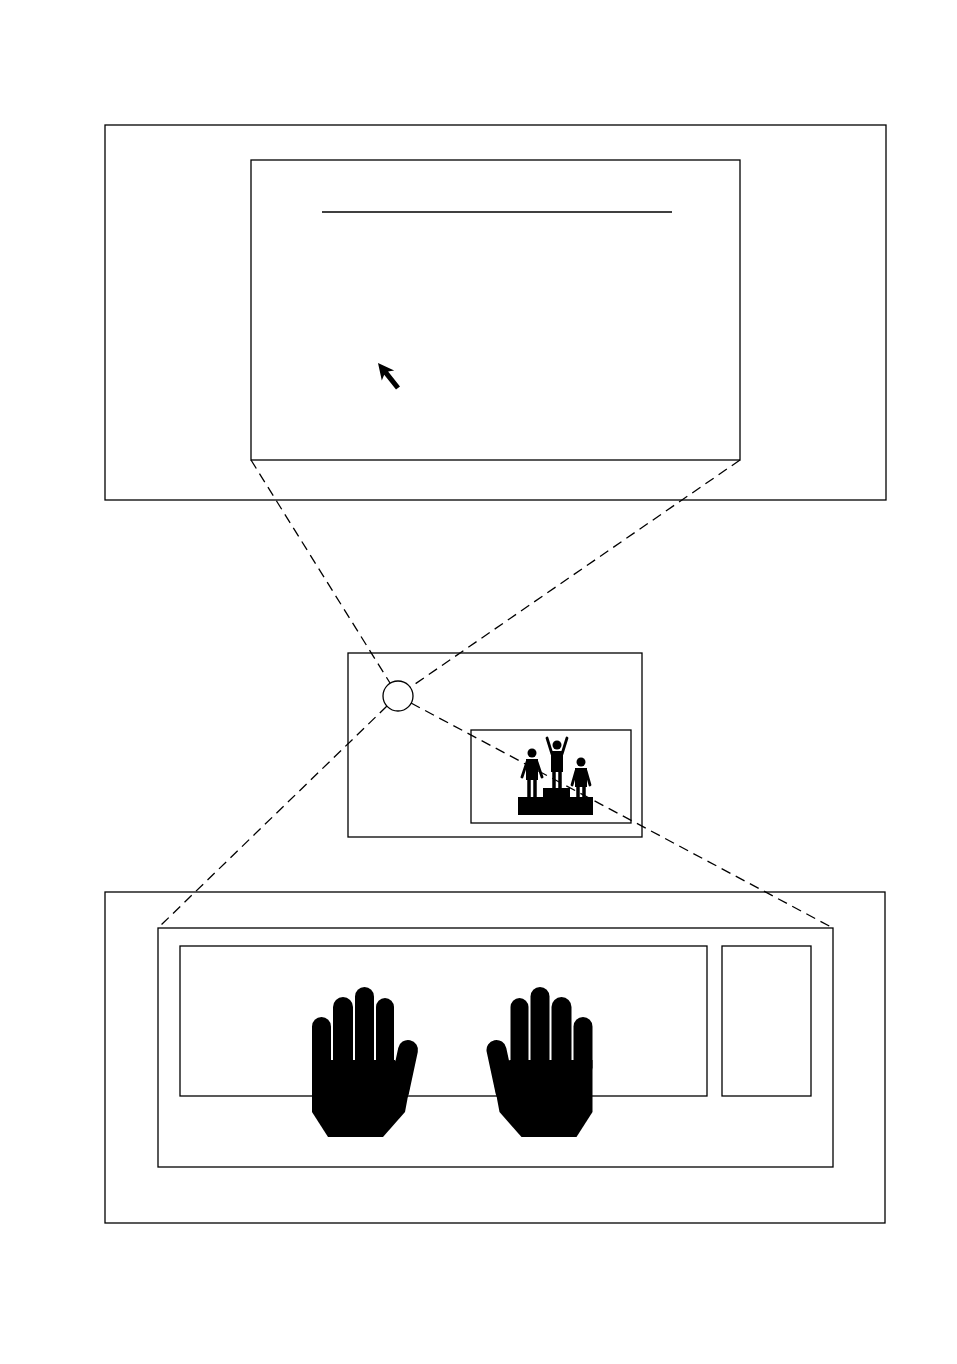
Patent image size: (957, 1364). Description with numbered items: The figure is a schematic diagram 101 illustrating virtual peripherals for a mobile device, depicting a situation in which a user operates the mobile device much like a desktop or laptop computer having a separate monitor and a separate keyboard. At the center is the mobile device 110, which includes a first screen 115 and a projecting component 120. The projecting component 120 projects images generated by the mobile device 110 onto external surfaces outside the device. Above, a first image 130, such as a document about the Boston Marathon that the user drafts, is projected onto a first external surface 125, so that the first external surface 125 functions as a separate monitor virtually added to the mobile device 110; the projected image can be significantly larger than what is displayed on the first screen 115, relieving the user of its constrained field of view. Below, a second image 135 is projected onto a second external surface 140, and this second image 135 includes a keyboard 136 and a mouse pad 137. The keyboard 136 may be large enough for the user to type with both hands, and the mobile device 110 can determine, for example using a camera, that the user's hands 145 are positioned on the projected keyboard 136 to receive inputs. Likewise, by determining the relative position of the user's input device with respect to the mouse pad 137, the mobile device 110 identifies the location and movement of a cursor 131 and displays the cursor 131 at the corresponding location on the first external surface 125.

The schematic diagram 101 is at (123, 76).
The first external surface 125 is at (808, 125).
The first image 130 is at (741, 312).
The cursor 131 is at (380, 383).
The mobile device 110 is at (620, 653).
The first screen 115 is at (571, 730).
The projecting component 120 is at (413, 697).
The second external surface 140 is at (833, 892).
The second image 135 is at (240, 1167).
The keyboard 136 is at (217, 1096).
The mouse pad 137 is at (762, 1096).
The user's hands 145 is at (590, 1105).